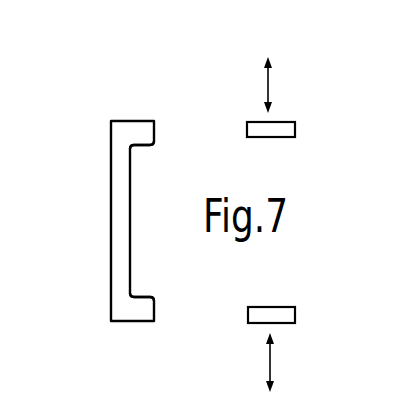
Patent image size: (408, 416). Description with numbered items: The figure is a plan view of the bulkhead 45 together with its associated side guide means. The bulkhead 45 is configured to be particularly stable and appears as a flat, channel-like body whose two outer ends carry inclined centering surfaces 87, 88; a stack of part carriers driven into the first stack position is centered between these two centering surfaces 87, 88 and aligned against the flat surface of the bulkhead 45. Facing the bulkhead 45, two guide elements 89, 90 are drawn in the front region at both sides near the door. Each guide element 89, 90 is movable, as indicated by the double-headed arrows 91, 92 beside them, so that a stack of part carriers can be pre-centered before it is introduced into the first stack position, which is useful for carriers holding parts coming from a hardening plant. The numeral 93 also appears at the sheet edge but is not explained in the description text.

The bulkhead 45 is at (118, 207).
The centering surface 87 is at (140, 147).
The centering surface 88 is at (140, 293).
The guide element 89 is at (280, 130).
The guide element 90 is at (283, 317).
The arrow 91 is at (269, 82).
The arrow 92 is at (270, 355).
The adjacent element (numeral at sheet edge) 93 is at (15, 402).